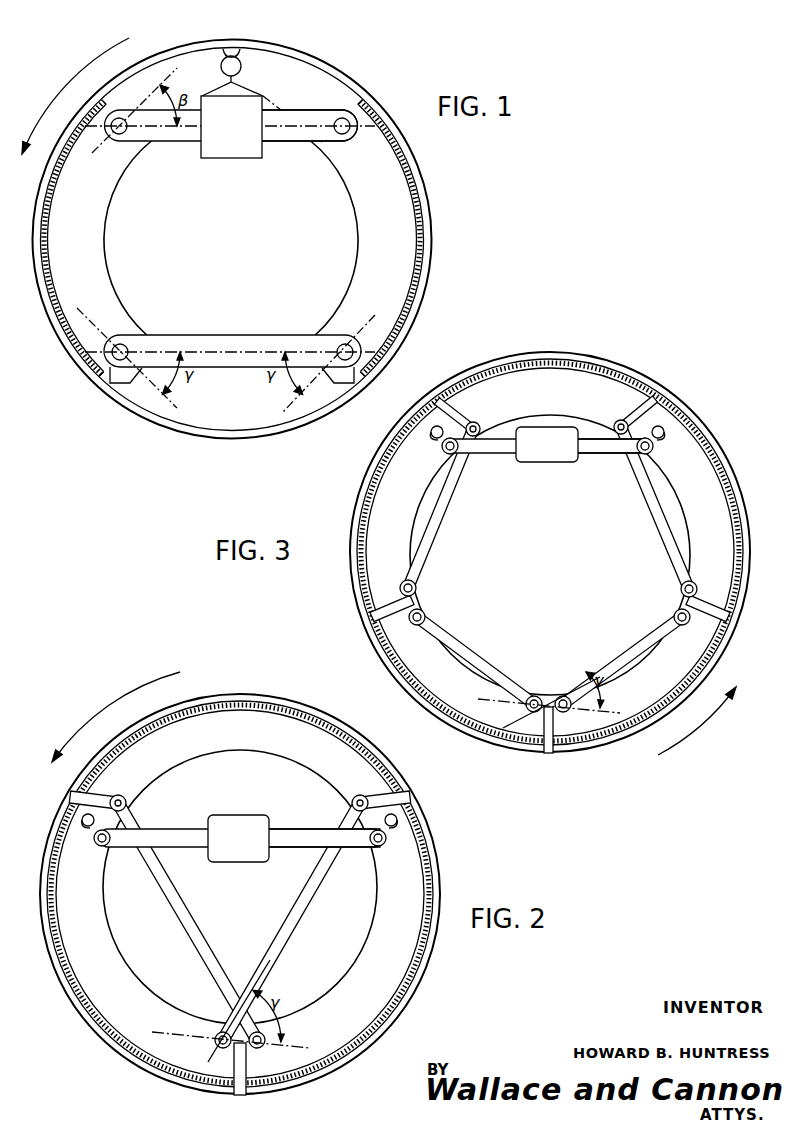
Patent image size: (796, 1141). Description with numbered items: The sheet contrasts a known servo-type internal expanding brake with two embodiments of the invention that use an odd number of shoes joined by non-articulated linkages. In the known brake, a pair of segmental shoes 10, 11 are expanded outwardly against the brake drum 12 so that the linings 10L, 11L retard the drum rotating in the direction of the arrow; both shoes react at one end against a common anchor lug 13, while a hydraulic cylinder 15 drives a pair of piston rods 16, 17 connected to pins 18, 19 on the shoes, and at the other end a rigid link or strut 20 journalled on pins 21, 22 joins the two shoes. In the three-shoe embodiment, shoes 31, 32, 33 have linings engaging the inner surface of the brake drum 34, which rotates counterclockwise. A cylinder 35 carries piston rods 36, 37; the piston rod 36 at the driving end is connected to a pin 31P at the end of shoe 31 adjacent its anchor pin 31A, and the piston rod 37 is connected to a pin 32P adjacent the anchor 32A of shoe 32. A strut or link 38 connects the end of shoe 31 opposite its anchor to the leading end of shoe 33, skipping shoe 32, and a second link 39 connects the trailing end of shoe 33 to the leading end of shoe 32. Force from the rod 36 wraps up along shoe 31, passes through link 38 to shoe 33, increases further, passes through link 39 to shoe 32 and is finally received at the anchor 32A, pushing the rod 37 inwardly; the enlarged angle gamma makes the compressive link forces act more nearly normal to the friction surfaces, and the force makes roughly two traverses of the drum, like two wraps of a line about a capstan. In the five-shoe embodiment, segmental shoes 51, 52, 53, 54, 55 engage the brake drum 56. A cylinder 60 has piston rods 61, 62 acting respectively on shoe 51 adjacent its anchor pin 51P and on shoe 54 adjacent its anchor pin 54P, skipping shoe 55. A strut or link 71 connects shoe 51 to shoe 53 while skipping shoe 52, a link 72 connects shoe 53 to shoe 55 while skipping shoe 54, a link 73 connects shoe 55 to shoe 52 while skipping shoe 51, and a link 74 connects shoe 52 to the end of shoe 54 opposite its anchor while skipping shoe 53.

In FIG. 1, the segmental shoe 10 is at (105, 276).
In FIG. 1, the lining 10L is at (68, 346).
In FIG. 1, the segmental shoe 11 is at (351, 203).
In FIG. 1, the lining 11L is at (372, 104).
In FIG. 1, the brake drum 12 is at (322, 62).
In FIG. 1, the anchor lug 13 is at (233, 55).
In FIG. 1, the hydraulic cylinder 15 is at (218, 158).
In FIG. 1, the piston rod 16 is at (174, 141).
In FIG. 1, the piston rod 17 is at (290, 141).
In FIG. 1, the pin 18 is at (116, 135).
In FIG. 1, the pin 19 is at (343, 134).
In FIG. 1, the rigid link or strut 20 is at (194, 335).
In FIG. 1, the pin 21 is at (122, 344).
In FIG. 1, the pin 22 is at (348, 343).
In FIG. 2, the shoe 31 is at (111, 953).
In FIG. 2, the anchor pin 31A is at (93, 812).
In FIG. 2, the pin 31P is at (102, 846).
In FIG. 2, the shoe 32 is at (401, 940).
In FIG. 2, the anchor pin 32A is at (388, 812).
In FIG. 2, the pin 32P is at (380, 847).
In FIG. 2, the shoe 33 is at (279, 739).
In FIG. 2, the brake drum 34 is at (423, 982).
In FIG. 2, the cylinder 35 is at (252, 818).
In FIG. 2, the piston rod 36 is at (167, 838).
In FIG. 2, the piston rod 37 is at (298, 838).
In FIG. 2, the strut or link 38 is at (280, 952).
In FIG. 2, the link 39 is at (196, 948).
In FIG. 3, the segmental shoe 51 is at (406, 518).
In FIG. 3, the anchor pin 51P is at (436, 440).
In FIG. 3, the segmental shoe 52 is at (469, 697).
In FIG. 3, the segmental shoe 53 is at (645, 697).
In FIG. 3, the segmental shoe 54 is at (716, 522).
In FIG. 3, the anchor pin 54P is at (659, 438).
In FIG. 3, the segmental shoe 55 is at (564, 396).
In FIG. 3, the brake drum 56 is at (368, 472).
In FIG. 3, the cylinder 60 is at (540, 462).
In FIG. 3, the piston rod 61 is at (496, 454).
In FIG. 3, the piston rod 62 is at (605, 453).
In FIG. 3, the strut or link 71 is at (456, 638).
In FIG. 3, the link 72 is at (662, 540).
In FIG. 3, the link 73 is at (438, 533).
In FIG. 3, the link 74 is at (616, 648).